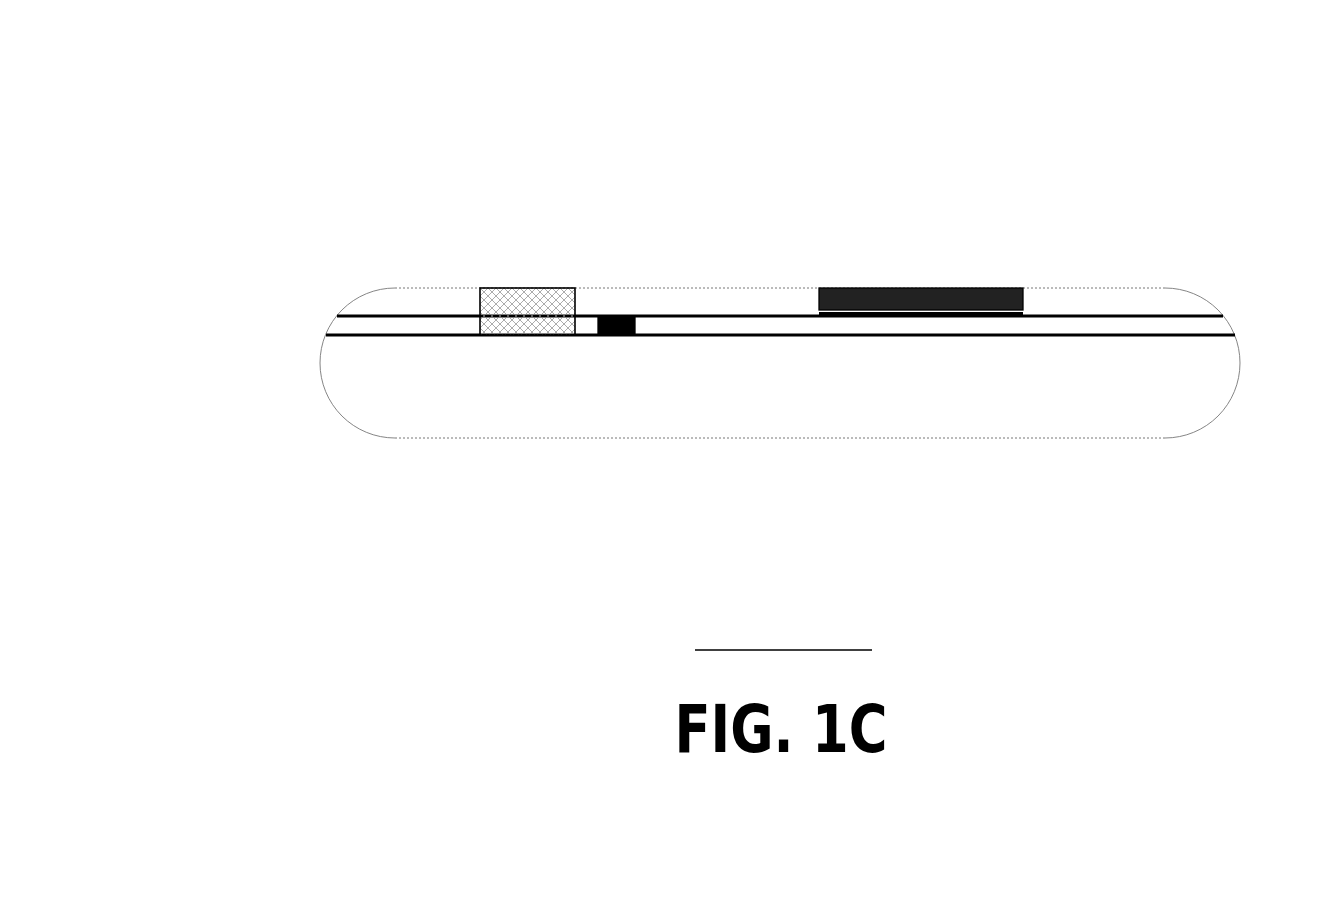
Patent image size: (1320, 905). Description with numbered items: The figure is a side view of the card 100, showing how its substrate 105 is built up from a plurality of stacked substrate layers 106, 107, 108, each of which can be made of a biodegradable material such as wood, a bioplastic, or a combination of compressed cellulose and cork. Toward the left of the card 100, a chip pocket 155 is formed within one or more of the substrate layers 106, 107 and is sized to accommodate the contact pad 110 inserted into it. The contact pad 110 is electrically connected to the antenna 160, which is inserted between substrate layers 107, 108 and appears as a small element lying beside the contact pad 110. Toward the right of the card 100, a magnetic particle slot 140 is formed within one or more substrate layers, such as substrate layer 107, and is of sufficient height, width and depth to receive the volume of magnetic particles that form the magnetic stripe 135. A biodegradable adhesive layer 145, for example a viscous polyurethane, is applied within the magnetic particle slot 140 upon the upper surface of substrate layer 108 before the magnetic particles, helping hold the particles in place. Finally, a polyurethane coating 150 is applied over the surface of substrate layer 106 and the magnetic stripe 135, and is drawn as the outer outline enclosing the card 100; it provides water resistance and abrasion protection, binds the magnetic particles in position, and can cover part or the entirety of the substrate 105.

The card 100 is at (703, 334).
The substrate 105 is at (681, 220).
The substrate layer 106 is at (368, 292).
The substrate layer 107 is at (368, 325).
The substrate layer 108 is at (368, 358).
The contact pad 110 is at (458, 218).
The magnetic stripe 135 is at (878, 164).
The magnetic particle slot 140 is at (850, 287).
The biodegradable adhesive layer 145 is at (1005, 316).
The polyurethane coating 150 is at (1123, 287).
The chip pocket 155 is at (467, 309).
The antenna 160 is at (620, 340).